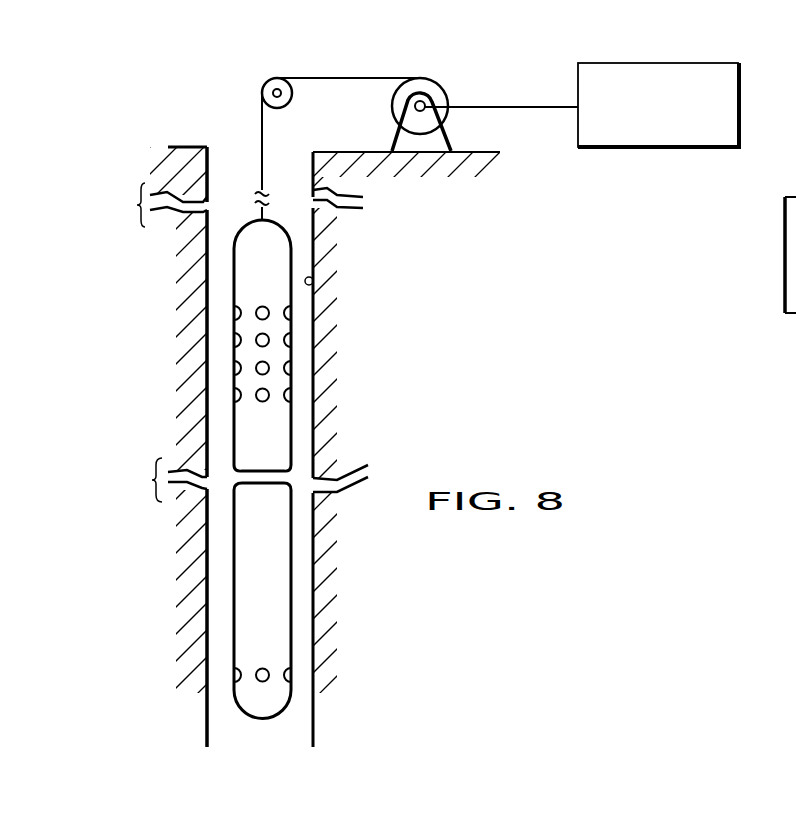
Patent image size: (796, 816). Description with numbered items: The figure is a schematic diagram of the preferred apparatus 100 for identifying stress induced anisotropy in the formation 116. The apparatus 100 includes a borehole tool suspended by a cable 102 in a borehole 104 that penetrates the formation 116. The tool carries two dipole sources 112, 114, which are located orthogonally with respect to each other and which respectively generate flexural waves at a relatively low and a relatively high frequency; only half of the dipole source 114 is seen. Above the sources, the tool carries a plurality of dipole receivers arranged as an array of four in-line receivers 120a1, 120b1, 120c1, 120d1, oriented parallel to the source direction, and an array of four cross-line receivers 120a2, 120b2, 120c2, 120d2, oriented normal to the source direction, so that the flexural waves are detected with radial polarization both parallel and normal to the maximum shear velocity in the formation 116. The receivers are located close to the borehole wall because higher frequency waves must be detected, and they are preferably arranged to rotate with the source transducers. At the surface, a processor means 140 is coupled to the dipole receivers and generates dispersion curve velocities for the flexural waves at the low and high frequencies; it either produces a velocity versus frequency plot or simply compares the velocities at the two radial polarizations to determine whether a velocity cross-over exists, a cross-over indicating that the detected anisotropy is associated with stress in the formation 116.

The apparatus 100 is at (221, 131).
The cable 102 is at (262, 157).
The borehole 104 is at (313, 279).
The dipole source 112 is at (232, 673).
The dipole source 114 is at (263, 681).
The formation 116 is at (448, 226).
The in-line dipole receiver 120a1 is at (268, 394).
The cross-line dipole receiver 120a2 is at (285, 404).
The in-line dipole receiver 120b1 is at (268, 366).
The cross-line dipole receiver 120b2 is at (285, 376).
The in-line dipole receiver 120c1 is at (268, 338).
The cross-line dipole receiver 120c2 is at (285, 348).
The in-line dipole receiver 120d1 is at (268, 310).
The cross-line dipole receiver 120d2 is at (285, 321).
The processor means 140 is at (740, 107).